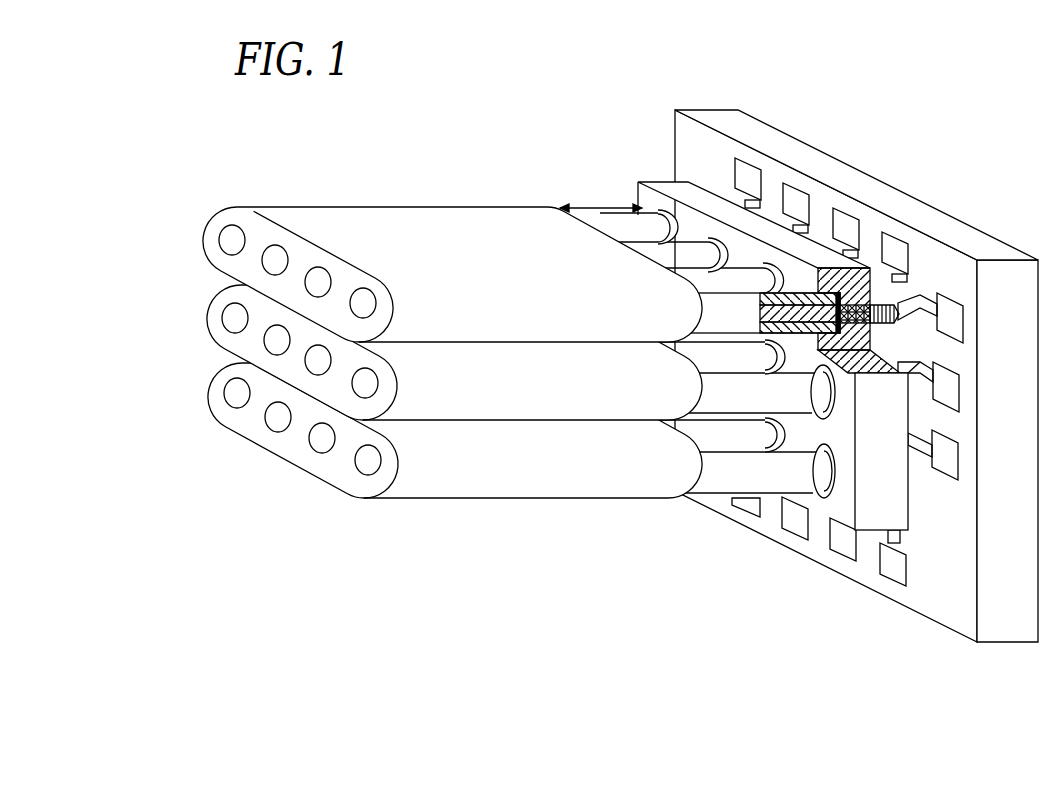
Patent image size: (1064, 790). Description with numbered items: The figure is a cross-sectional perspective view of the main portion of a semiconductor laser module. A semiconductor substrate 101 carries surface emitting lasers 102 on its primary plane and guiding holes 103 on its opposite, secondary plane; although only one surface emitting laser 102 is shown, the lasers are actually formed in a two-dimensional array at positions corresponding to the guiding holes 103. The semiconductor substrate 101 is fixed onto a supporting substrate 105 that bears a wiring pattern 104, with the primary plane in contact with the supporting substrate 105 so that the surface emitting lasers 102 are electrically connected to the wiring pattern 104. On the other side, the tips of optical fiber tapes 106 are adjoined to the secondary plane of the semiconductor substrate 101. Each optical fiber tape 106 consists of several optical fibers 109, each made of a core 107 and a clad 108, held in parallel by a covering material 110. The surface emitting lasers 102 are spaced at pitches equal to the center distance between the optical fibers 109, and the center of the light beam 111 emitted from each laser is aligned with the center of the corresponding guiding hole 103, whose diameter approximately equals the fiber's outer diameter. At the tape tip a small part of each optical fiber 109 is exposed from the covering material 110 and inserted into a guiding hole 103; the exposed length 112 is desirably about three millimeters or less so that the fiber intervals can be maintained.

The semiconductor substrate 101 is at (678, 190).
The surface emitting laser 102 is at (877, 292).
The guiding hole 103 is at (655, 213).
The wiring pattern 104 is at (920, 302).
The supporting substrate 105 is at (1002, 628).
The optical fiber tape 106 is at (425, 444).
The core 107 is at (793, 313).
The clad 108 is at (822, 303).
The optical fiber 109 is at (238, 407).
The covering material 110 is at (215, 408).
The light beam 111 is at (852, 340).
The exposed length 112 is at (603, 205).